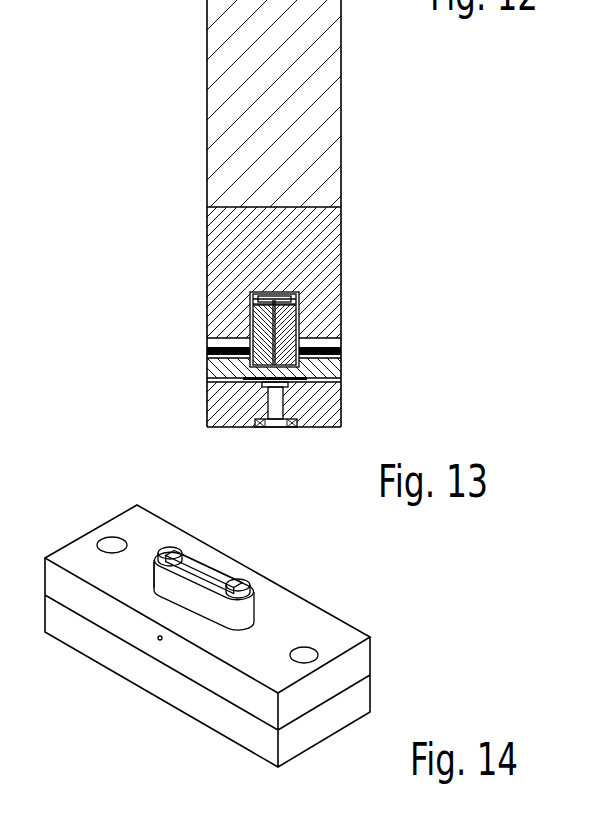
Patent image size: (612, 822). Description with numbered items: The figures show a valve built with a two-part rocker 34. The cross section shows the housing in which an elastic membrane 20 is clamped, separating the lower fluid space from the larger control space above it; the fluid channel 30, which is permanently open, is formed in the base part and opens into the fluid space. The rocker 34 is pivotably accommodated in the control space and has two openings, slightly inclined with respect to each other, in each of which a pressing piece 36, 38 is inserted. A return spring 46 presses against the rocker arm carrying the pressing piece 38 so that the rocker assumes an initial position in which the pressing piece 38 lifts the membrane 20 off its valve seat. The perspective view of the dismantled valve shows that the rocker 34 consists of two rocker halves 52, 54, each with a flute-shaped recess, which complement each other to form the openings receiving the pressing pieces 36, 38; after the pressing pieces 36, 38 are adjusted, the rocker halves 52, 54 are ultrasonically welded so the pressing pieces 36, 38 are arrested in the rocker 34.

In FIG. 13, the membrane 20 is at (303, 372).
In FIG. 13, the fluid channel 30 is at (275, 408).
In FIG. 14, the rocker 34 is at (218, 610).
In FIG. 14, the pressing piece 36 is at (174, 550).
In FIG. 14, the pressing piece 38 is at (240, 583).
In FIG. 13, the return spring 46 is at (338, 258).
In FIG. 13, the rocker half 52 is at (257, 322).
In FIG. 14, the rocker half 52 is at (205, 565).
In FIG. 13, the rocker half 54 is at (298, 313).
In FIG. 14, the rocker half 54 is at (166, 583).